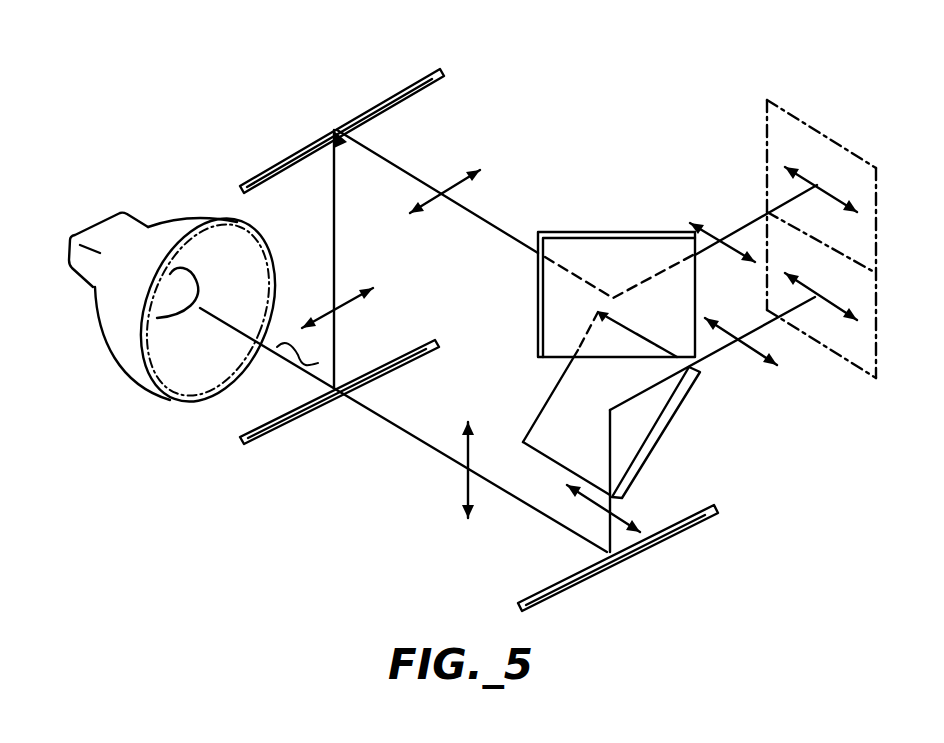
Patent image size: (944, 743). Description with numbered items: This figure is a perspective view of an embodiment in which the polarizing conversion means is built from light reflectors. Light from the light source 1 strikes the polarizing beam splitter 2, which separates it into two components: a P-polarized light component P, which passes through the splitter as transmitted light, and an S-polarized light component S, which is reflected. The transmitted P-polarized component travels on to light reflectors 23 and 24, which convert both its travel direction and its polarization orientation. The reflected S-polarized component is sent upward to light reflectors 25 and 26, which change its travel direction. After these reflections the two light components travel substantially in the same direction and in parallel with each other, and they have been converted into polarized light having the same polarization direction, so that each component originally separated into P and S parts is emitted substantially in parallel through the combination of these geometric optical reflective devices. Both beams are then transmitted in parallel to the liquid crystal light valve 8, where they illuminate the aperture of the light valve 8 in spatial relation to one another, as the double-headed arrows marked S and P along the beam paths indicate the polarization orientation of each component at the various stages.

The light source 1 is at (175, 232).
The polarizing beam splitter 2 is at (291, 422).
The liquid crystal light valve 8 is at (807, 125).
The light reflector 23 is at (688, 525).
The light reflector 24 is at (663, 433).
The light reflector 25 is at (395, 85).
The light reflector 26 is at (604, 232).
The S-polarized light component S is at (356, 305).
The P-polarized light component P is at (463, 490).